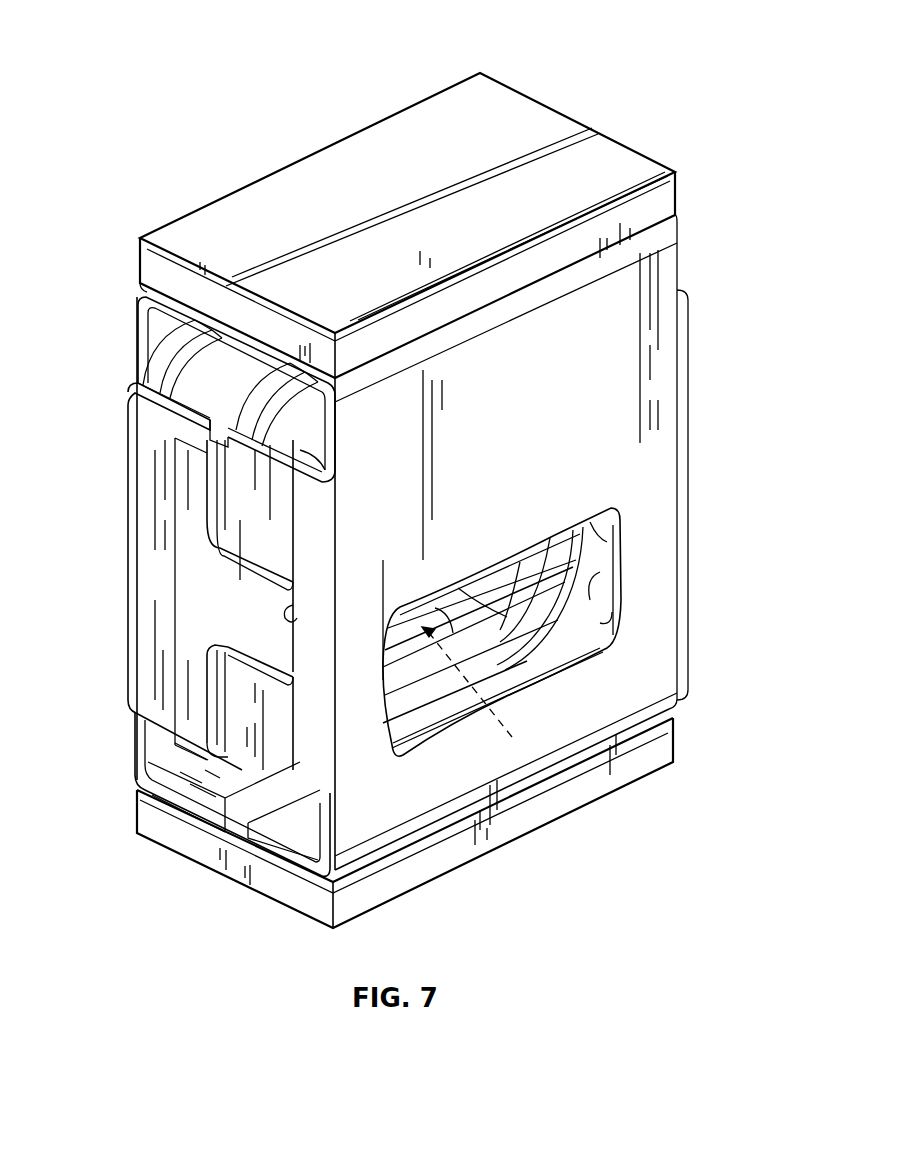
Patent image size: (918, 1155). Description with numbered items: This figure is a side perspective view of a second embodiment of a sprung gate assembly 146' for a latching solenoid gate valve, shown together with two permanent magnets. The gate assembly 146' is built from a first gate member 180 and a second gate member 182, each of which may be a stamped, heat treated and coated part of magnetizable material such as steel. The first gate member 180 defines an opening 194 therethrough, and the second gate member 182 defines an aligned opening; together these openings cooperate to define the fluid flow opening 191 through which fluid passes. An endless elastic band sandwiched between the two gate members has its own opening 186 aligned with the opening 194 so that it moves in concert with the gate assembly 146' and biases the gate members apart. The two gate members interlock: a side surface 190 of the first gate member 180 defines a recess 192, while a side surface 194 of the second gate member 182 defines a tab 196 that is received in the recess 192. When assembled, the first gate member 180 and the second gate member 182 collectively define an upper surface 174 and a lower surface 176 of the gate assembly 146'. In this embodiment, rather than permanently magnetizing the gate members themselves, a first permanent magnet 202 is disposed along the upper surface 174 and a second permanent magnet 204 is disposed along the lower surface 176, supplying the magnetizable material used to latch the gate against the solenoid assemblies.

The gate assembly 146' is at (739, 40).
The first permanent magnet 202 is at (450, 112).
The second permanent magnet 204 is at (598, 788).
The upper surface 174 is at (146, 268).
The lower surface 176 is at (350, 865).
The first gate member 180 is at (664, 271).
The second gate member 182 is at (137, 330).
The opening of the endless elastic band 186 is at (597, 605).
The side surface of the first gate member 190 is at (268, 515).
The fluid flow opening 191 is at (482, 700).
The recess 192 is at (297, 615).
The opening in the first gate member 194 is at (178, 540).
The tab 196 is at (210, 602).